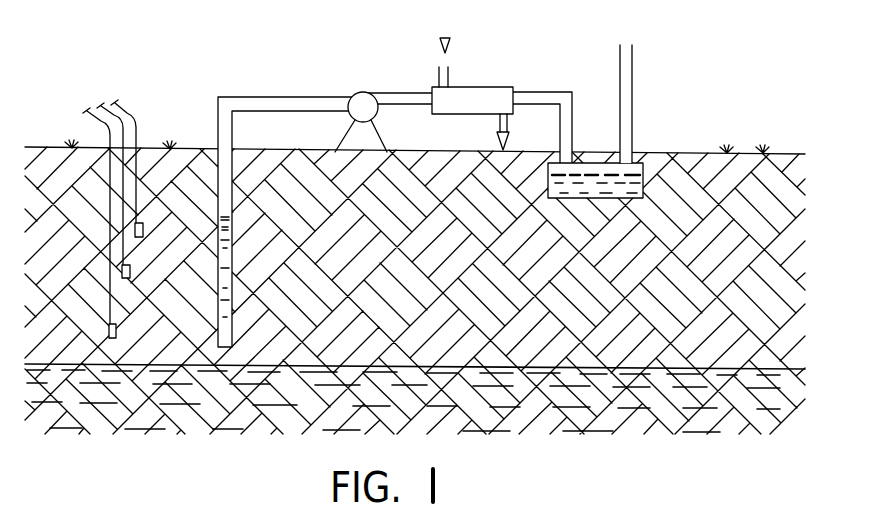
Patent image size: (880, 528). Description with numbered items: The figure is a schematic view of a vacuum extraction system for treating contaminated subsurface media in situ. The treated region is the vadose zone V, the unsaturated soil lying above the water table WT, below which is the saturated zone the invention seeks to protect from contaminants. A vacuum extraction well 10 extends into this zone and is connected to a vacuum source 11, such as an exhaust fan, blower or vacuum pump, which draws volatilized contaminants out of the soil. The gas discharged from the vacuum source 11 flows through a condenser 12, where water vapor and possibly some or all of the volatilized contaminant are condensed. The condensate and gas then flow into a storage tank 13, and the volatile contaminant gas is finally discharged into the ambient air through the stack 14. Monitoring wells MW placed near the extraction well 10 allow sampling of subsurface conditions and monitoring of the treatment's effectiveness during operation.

The vacuum extraction well 10 is at (235, 261).
The vacuum source 11 is at (353, 93).
The condenser 12 is at (472, 87).
The storage tank 13 is at (588, 199).
The stack 14 is at (633, 67).
The monitoring wells MW is at (158, 226).
The water table WT is at (718, 369).
The vadose zone V is at (826, 156).